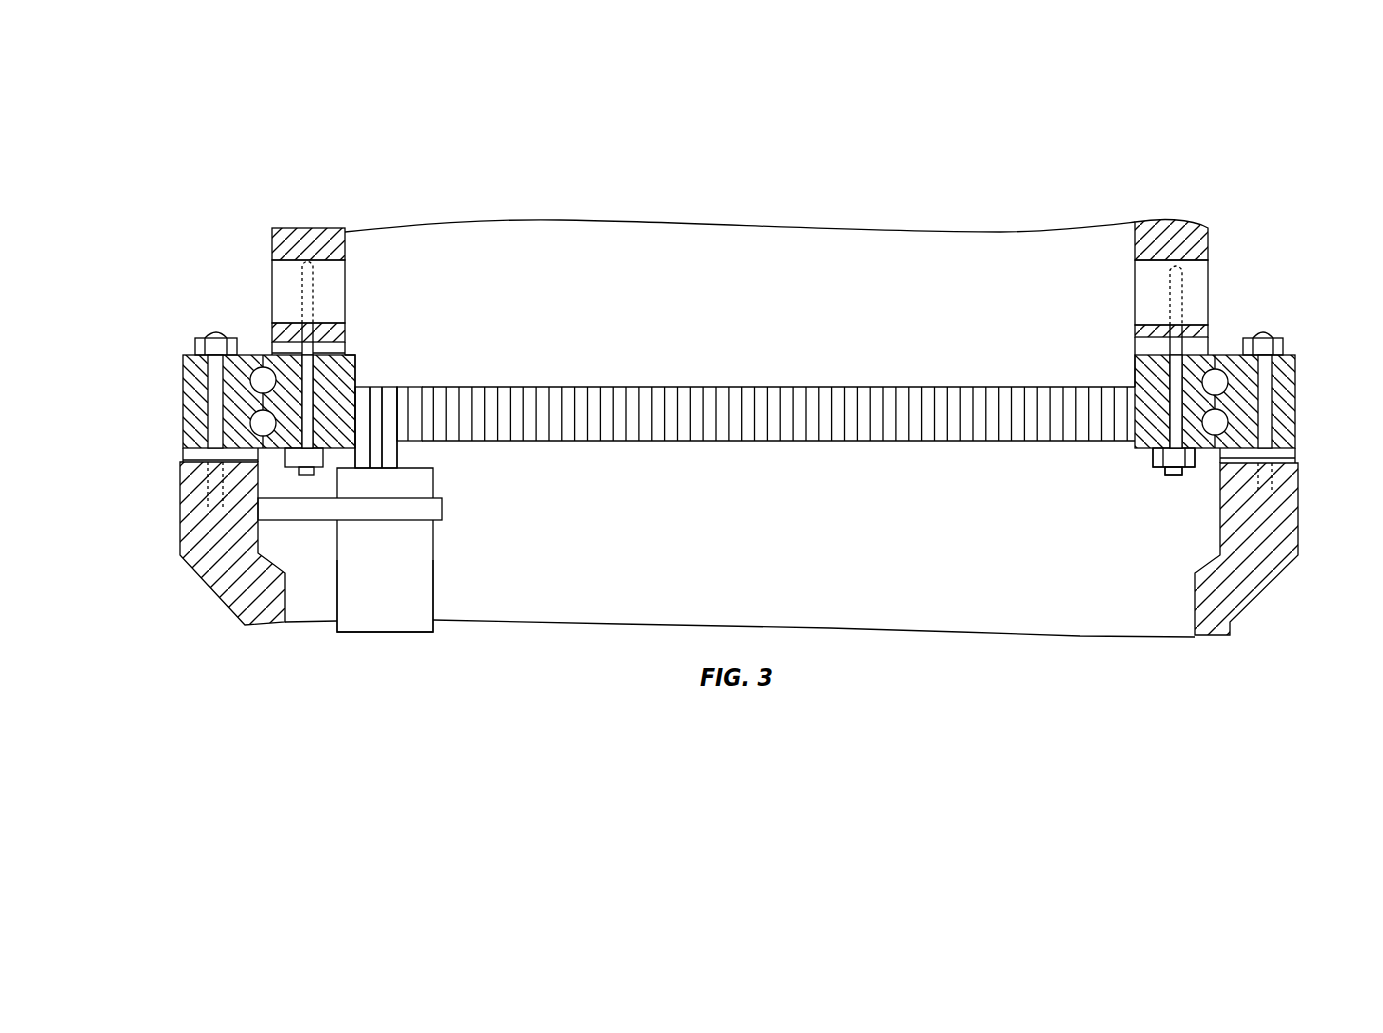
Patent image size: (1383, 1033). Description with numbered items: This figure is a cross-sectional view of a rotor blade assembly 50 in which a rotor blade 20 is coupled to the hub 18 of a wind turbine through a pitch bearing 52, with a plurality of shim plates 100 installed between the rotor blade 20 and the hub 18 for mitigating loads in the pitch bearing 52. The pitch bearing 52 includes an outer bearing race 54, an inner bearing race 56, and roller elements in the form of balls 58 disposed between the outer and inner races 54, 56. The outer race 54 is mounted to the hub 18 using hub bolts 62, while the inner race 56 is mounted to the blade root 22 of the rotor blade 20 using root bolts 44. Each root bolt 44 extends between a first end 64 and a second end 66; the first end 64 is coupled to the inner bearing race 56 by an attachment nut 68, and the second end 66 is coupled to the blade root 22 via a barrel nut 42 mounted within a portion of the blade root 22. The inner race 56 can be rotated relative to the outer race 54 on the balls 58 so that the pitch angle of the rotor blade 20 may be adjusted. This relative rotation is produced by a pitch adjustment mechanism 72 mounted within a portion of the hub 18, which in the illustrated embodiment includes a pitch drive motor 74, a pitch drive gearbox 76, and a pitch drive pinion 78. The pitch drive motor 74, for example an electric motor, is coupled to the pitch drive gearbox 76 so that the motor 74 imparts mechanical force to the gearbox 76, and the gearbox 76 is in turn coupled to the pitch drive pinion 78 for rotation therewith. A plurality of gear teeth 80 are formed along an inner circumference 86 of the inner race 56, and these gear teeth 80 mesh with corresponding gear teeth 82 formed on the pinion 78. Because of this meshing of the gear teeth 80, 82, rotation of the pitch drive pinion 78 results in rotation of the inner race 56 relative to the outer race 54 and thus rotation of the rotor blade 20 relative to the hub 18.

The hub 18 is at (218, 602).
The rotor blade 20 is at (1214, 231).
The blade root 22 is at (1150, 235).
The barrel nut 42 is at (270, 278).
The root bolt 44 is at (268, 356).
The rotor blade assembly 50 is at (172, 184).
The pitch bearing 52 is at (176, 372).
The outer bearing race 54 is at (185, 424).
The inner bearing race 56 is at (355, 383).
The balls 58 is at (1228, 425).
The hub bolts 62 is at (205, 338).
The first end 64 is at (1172, 476).
The second end 66 is at (1160, 268).
The attachment nut 68 is at (1158, 460).
The pitch adjustment mechanism 72 is at (438, 598).
The pitch drive motor 74 is at (382, 605).
The pitch drive gearbox 76 is at (420, 488).
The pitch drive pinion 78 is at (422, 458).
The gear teeth 80 is at (668, 406).
The gear teeth 82 is at (412, 430).
The inner circumference 86 is at (848, 447).
The shim plate 100 is at (349, 346).